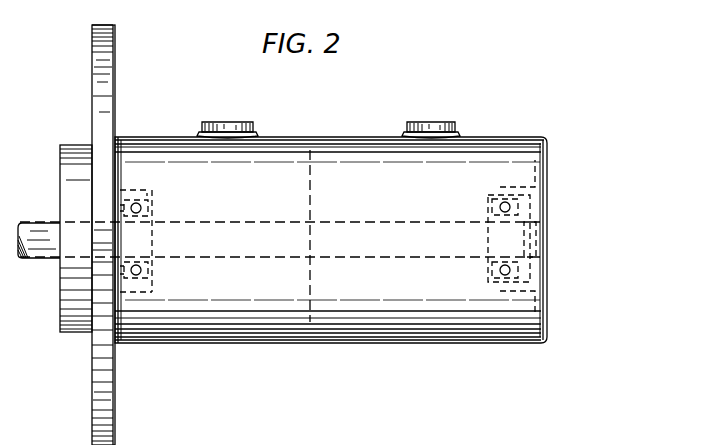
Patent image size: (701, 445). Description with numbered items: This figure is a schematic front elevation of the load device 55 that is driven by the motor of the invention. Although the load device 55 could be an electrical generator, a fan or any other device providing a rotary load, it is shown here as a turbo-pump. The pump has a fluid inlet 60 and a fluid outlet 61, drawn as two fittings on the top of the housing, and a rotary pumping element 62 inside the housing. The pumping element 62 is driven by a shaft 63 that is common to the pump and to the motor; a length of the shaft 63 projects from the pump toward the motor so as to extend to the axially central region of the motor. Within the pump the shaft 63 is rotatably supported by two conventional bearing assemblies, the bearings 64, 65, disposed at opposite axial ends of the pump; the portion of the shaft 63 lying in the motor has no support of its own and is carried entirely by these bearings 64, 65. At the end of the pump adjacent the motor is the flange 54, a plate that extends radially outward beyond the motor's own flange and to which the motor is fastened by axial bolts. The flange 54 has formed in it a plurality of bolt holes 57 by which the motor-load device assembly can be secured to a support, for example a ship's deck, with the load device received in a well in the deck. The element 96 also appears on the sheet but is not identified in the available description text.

The mounting plate 54 is at (104, 128).
The gear housing 55 is at (151, 137).
The mounting flange 57 is at (100, 62).
The filler plug 60 is at (232, 122).
The filler plug 61 is at (434, 122).
The partition wall 62 is at (349, 186).
The shaft 63 is at (236, 222).
The bearing 64 is at (496, 204).
The bearing 65 is at (150, 197).
The base 96 is at (287, 444).